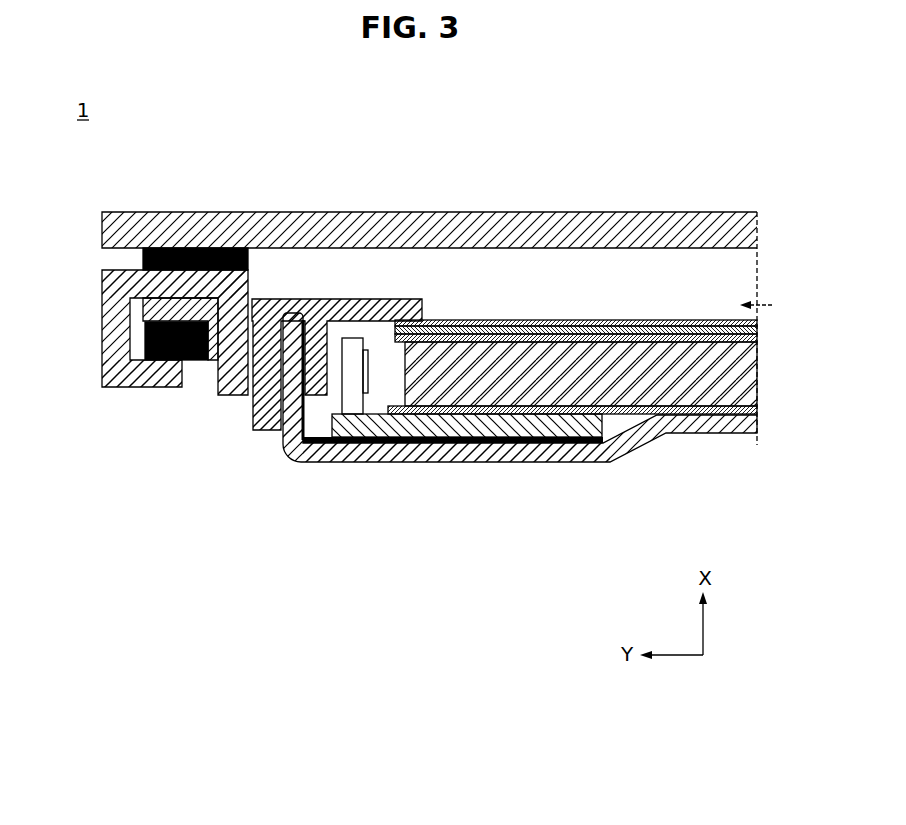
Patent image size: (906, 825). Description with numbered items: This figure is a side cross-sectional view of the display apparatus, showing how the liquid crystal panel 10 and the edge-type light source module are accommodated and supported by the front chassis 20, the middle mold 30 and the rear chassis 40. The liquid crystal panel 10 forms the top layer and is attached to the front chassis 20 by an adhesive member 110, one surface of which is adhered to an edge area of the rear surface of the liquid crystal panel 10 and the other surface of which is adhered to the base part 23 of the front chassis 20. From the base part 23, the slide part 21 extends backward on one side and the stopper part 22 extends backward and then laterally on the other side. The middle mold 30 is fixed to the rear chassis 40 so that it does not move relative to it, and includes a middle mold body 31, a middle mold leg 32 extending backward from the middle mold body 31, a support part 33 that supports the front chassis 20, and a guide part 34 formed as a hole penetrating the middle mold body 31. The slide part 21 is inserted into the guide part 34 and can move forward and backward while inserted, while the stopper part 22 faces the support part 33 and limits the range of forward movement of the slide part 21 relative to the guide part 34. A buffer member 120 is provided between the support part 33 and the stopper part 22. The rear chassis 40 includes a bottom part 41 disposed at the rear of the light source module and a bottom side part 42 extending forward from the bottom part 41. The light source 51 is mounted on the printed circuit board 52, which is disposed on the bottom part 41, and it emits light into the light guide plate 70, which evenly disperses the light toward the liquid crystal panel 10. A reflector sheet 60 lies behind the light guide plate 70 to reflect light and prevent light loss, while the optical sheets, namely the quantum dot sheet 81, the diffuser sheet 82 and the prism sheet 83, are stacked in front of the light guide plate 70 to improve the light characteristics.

The liquid crystal panel 10 is at (362, 210).
The front chassis 20 is at (90, 304).
The slide part 21 is at (218, 380).
The stopper part 22 is at (138, 387).
The base part 23 is at (174, 247).
The middle mold 30 is at (442, 293).
The middle mold body 31 is at (330, 299).
The middle mold leg 32 is at (280, 433).
The support part 33 is at (199, 306).
The guide part 34 is at (254, 299).
The rear chassis 40 is at (677, 449).
The bottom part 41 is at (468, 448).
The bottom side part 42 is at (255, 413).
The light source 51 is at (352, 344).
The printed circuit board 52 is at (404, 440).
The reflector sheet 60 is at (757, 410).
The light guide plate 70 is at (757, 375).
The quantum dot sheet 81 is at (757, 338).
The diffuser sheet 82 is at (757, 330).
The prism sheet 83 is at (757, 322).
The adhesive member 110 is at (133, 257).
The buffer member 120 is at (134, 339).